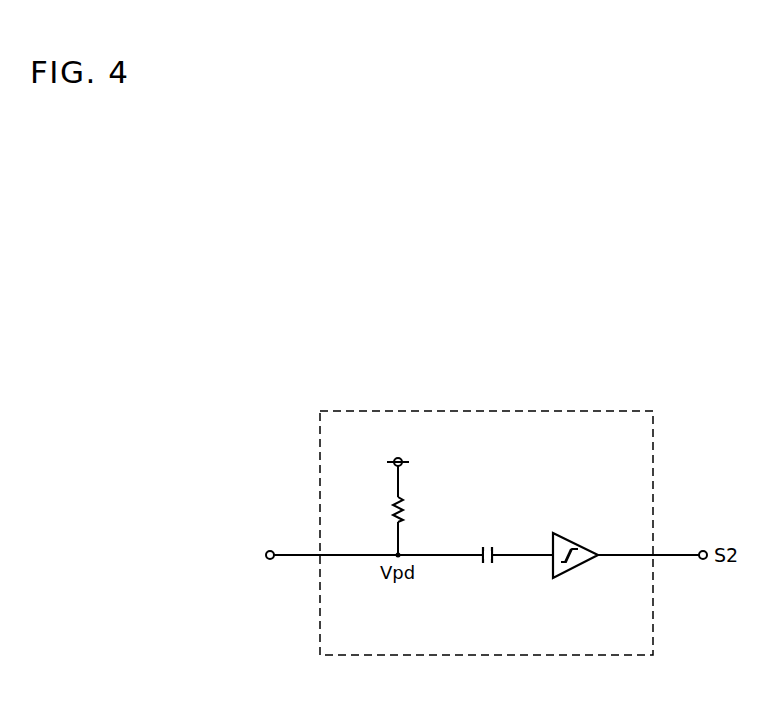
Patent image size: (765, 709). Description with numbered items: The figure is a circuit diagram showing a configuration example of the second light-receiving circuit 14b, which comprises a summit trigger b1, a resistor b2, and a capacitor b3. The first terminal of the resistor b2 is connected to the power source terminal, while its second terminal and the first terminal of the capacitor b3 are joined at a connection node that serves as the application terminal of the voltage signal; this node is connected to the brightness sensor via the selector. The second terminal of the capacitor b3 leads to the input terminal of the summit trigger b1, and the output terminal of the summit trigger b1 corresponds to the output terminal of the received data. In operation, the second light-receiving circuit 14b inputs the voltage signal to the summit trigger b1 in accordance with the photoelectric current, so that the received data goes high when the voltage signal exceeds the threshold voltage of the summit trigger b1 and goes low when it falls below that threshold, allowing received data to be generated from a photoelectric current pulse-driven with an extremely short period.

The second light-receiving circuit 14b is at (486, 411).
The summit trigger b1 is at (575, 545).
The resistor b2 is at (387, 513).
The capacitor b3 is at (485, 545).